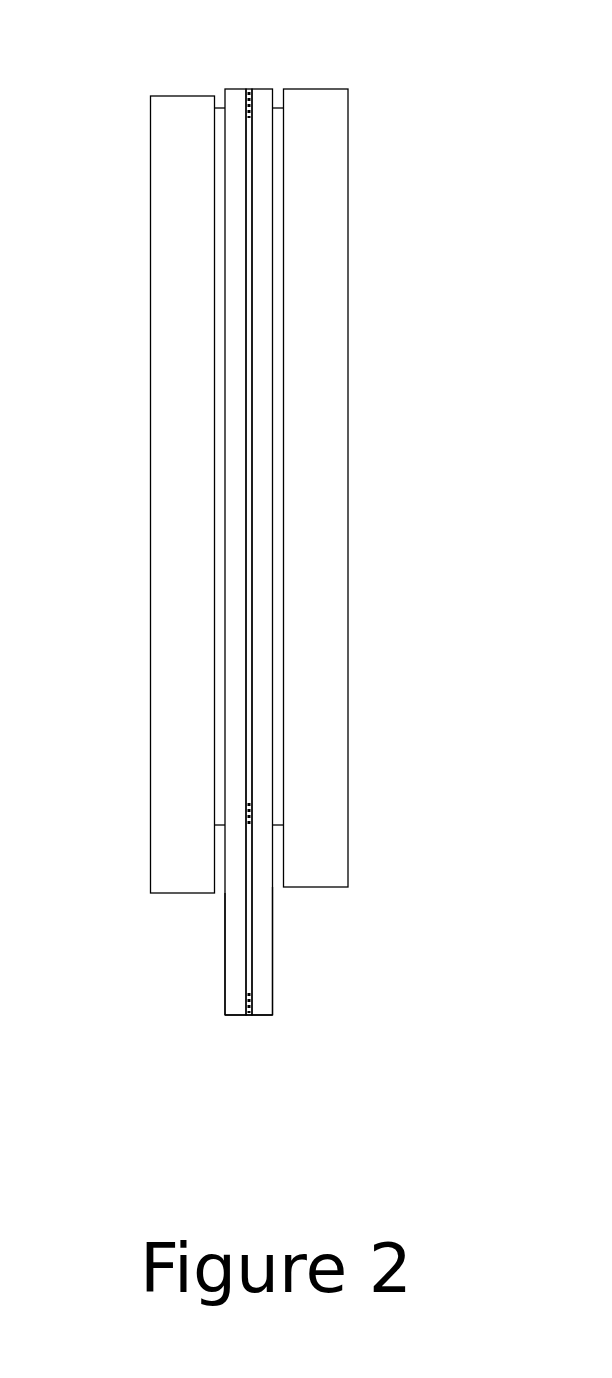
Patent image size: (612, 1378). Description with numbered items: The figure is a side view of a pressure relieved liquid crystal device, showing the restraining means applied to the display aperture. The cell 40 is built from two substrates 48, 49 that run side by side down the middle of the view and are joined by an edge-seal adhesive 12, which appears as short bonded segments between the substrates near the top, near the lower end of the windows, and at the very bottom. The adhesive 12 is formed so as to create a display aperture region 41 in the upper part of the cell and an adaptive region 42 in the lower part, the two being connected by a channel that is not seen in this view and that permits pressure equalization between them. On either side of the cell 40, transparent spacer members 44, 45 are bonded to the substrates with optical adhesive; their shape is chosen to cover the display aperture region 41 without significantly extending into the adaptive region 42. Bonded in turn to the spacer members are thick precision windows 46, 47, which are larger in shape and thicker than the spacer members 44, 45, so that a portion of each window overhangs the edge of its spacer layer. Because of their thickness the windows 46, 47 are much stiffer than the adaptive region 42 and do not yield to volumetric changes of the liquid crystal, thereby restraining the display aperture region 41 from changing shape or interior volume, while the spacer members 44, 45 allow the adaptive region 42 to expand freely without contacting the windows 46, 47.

The edge-seal adhesive 12 is at (247, 108).
The cell 40 is at (256, 508).
The display aperture region 41 is at (257, 300).
The adaptive region 42 is at (253, 920).
The transparent spacer member 44 is at (221, 108).
The transparent spacer member 45 is at (278, 108).
The precision window 46 is at (177, 162).
The precision window 47 is at (325, 162).
The substrate 48 is at (230, 89).
The substrate 49 is at (291, 514).